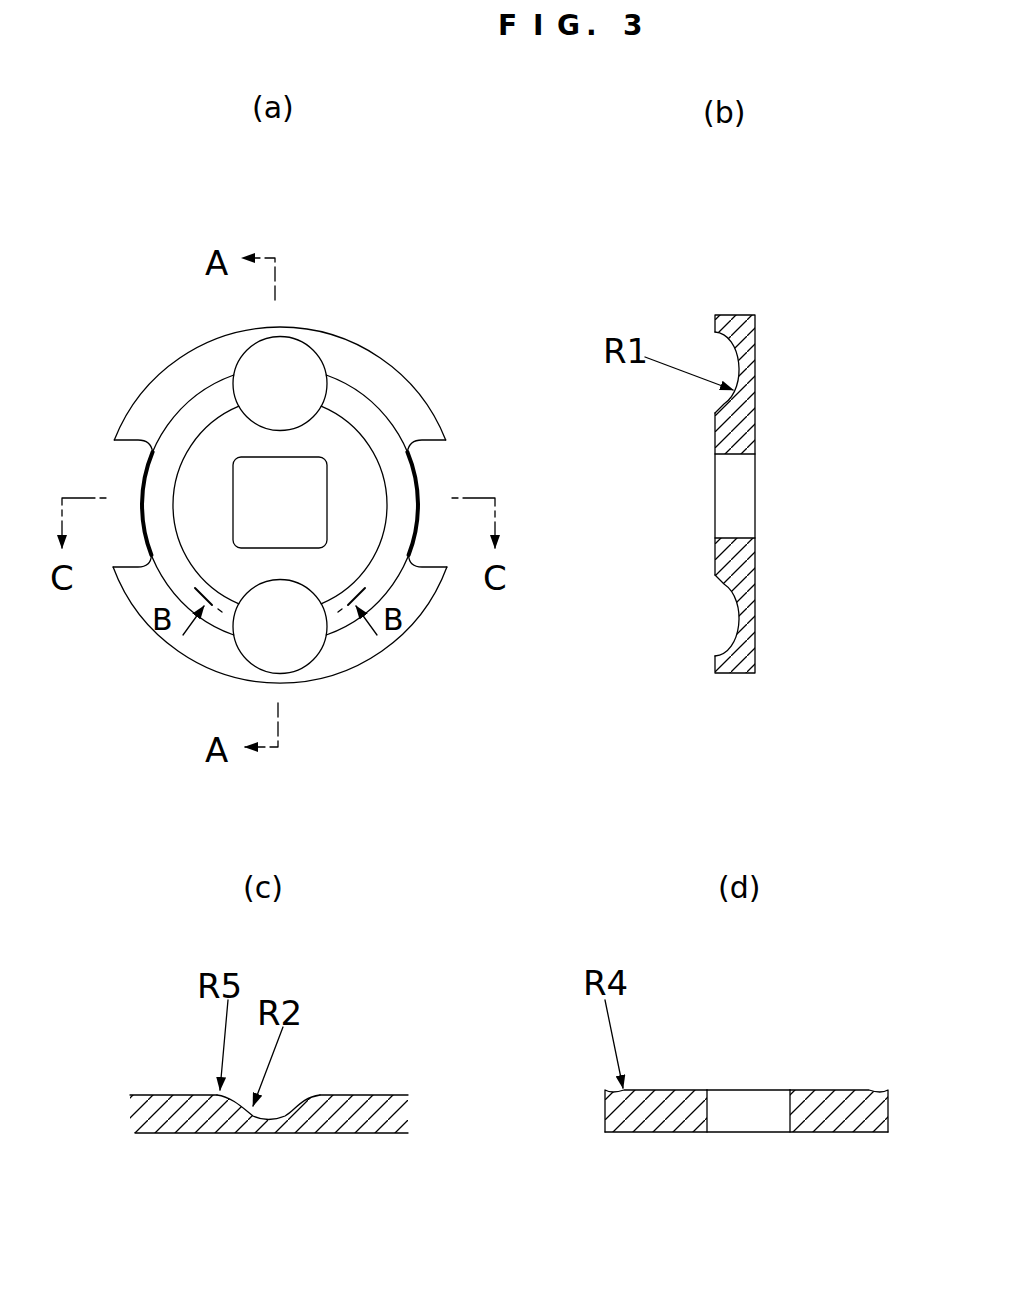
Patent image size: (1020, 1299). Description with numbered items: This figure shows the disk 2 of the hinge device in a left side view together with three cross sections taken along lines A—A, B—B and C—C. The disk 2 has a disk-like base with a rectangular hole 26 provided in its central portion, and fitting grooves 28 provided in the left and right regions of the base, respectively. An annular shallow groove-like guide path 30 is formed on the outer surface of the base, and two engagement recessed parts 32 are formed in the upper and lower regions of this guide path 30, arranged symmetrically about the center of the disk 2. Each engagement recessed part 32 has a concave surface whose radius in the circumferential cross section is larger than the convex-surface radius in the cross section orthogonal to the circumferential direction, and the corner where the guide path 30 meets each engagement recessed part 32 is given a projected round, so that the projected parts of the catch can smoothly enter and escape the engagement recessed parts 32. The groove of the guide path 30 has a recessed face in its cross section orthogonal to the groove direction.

The disk 2 is at (372, 323).
The rectangular hole 26 is at (248, 535).
The fitting grooves 28 is at (135, 468).
The guide path 30 is at (190, 418).
The engagement recessed parts 32 is at (293, 352).